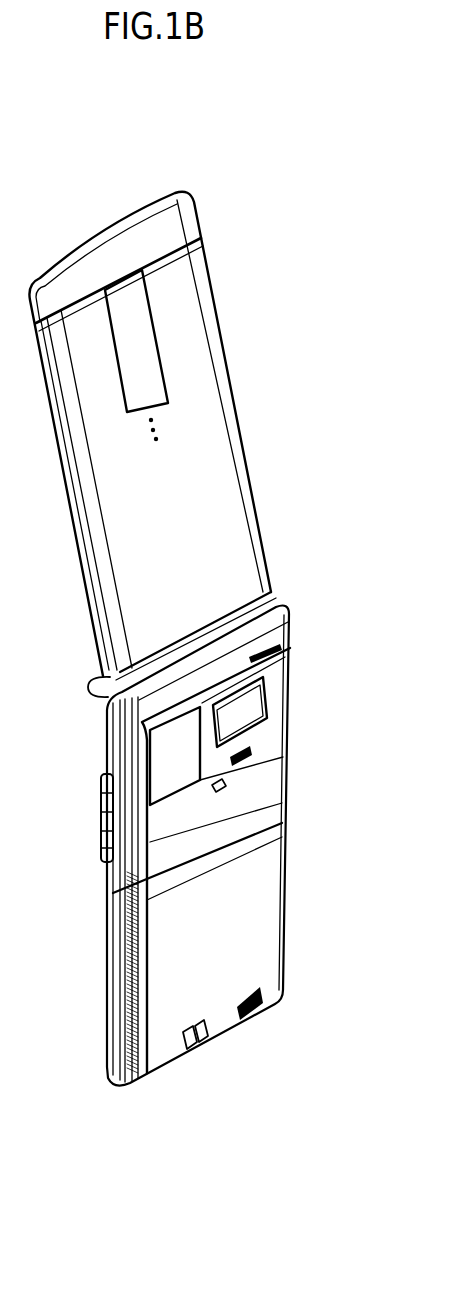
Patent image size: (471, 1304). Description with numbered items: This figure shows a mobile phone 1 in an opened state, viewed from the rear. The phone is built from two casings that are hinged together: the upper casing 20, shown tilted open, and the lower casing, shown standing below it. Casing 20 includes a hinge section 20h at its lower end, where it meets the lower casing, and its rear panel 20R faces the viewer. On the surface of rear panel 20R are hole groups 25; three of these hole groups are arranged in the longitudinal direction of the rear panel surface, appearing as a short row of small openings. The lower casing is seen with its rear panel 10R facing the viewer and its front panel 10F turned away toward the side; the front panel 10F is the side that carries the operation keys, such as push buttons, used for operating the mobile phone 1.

The mobile phone 1 is at (186, 184).
The casing 20 is at (205, 258).
The rear panel 20R is at (183, 347).
The hole groups 25 is at (160, 438).
The hinge section 20h is at (97, 684).
The rear panel 10R is at (154, 1016).
The front panel 10F is at (103, 1052).